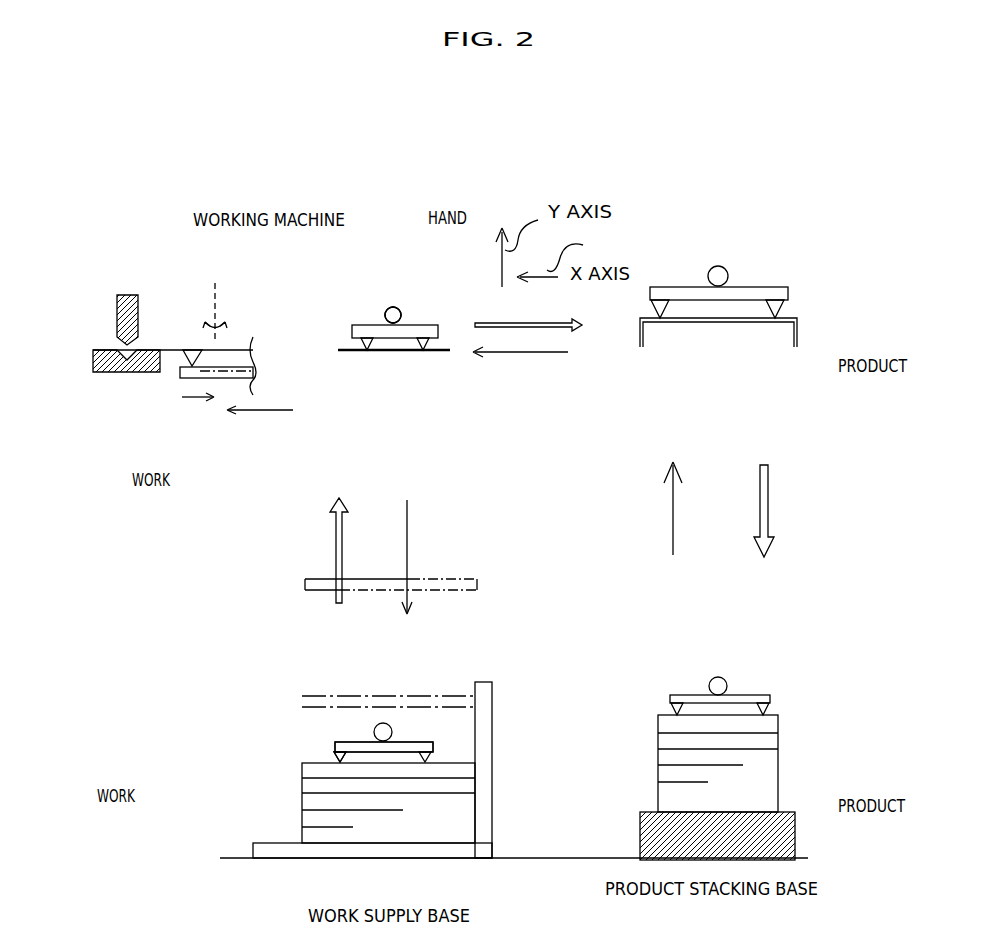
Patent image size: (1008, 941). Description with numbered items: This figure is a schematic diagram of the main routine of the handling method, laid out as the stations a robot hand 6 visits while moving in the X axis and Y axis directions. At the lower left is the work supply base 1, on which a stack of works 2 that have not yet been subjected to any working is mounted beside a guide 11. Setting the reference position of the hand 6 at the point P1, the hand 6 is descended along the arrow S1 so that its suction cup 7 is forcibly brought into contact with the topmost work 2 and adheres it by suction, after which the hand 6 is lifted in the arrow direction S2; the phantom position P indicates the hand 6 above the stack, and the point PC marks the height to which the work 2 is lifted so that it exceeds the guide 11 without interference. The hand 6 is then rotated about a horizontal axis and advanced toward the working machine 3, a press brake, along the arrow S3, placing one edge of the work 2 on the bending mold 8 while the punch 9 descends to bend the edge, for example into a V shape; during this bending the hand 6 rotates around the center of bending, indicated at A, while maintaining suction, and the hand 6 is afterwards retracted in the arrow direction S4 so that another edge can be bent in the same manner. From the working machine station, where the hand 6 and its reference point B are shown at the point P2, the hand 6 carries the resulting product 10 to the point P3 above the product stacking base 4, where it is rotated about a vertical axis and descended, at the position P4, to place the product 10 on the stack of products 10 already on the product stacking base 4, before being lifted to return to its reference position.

The work supply base 1 is at (323, 857).
The work 2 is at (166, 352).
The working machine 3 is at (210, 270).
The product stacking base 4 is at (640, 837).
The hand 6 is at (413, 330).
The suction cup 7 is at (335, 753).
The bending mold 8 is at (112, 372).
The punch 9 is at (117, 325).
The product 10 is at (797, 325).
The guide 11 is at (492, 808).
The rotation axis A is at (217, 317).
The hand reference point B is at (387, 312).
The hand waiting position P is at (417, 695).
The point P1 is at (430, 735).
The point P2 is at (386, 272).
The point P3 is at (753, 273).
The product stacking position P4 is at (742, 687).
The point PC is at (447, 579).
The arrow S1 is at (408, 530).
The arrow direction S2 is at (338, 548).
The arrow S3 is at (277, 412).
The arrow direction S4 is at (195, 398).